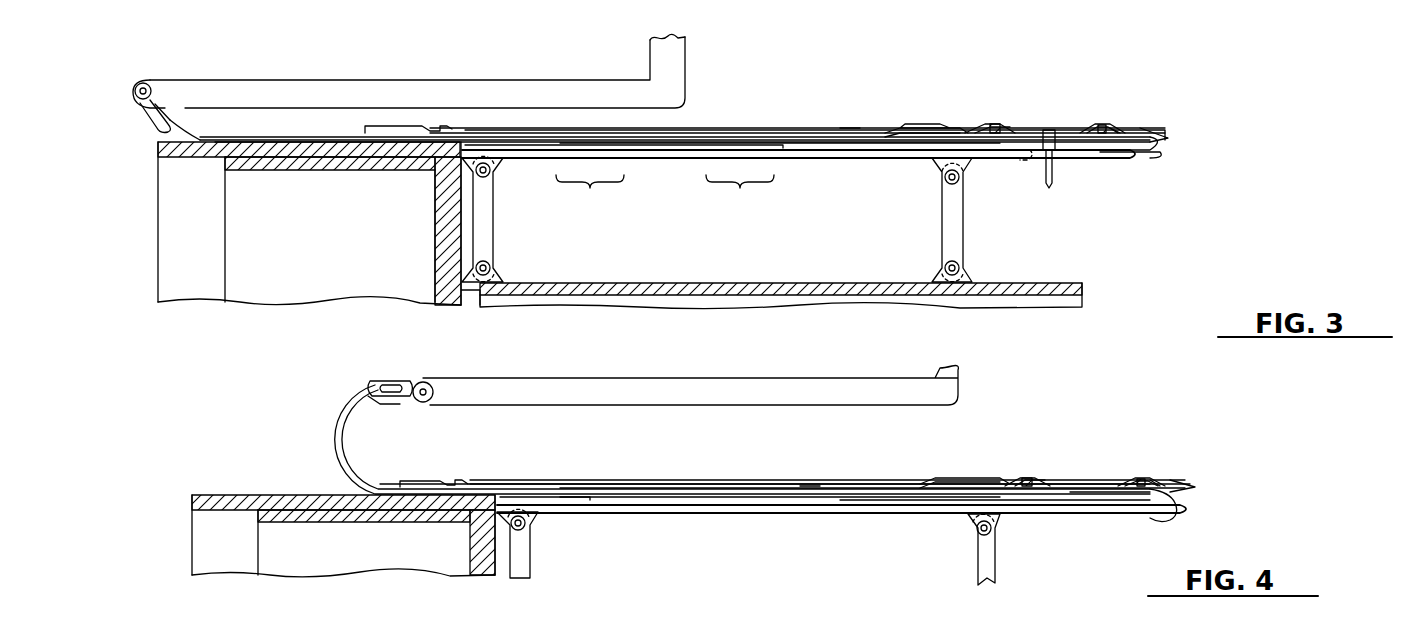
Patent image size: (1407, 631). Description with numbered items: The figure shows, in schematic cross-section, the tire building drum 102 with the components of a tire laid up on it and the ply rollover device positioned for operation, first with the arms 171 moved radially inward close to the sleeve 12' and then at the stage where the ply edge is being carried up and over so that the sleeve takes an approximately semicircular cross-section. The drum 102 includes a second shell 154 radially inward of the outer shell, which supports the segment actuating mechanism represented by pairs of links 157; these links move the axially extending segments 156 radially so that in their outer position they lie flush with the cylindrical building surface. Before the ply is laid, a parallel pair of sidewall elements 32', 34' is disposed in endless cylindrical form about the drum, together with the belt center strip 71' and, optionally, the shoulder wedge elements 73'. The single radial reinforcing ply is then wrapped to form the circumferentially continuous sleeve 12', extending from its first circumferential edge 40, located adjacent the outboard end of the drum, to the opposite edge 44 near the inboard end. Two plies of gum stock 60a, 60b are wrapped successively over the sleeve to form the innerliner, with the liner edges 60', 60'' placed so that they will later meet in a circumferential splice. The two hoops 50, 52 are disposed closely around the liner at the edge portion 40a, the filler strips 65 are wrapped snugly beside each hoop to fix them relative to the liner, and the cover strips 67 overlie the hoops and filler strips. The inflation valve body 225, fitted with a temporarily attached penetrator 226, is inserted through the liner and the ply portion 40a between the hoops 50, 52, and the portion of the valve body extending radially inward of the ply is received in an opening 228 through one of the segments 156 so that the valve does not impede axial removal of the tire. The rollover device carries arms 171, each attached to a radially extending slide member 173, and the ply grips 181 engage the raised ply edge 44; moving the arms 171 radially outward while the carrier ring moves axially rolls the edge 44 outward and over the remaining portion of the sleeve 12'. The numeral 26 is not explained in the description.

In FIG. 3, the cylindrical sleeve 12' is at (843, 97).
In FIG. 4, the cylindrical sleeve 12' is at (790, 456).
In FIG. 3, the base plate 26 is at (196, 158).
In FIG. 3, the sidewall element 32' is at (580, 172).
In FIG. 4, the sidewall element 32' is at (545, 474).
In FIG. 3, the sidewall element 34' is at (798, 172).
In FIG. 4, the sidewall element 34' is at (841, 480).
In FIG. 3, the first circumferential edge 40 is at (1165, 146).
In FIG. 4, the first circumferential edge 40 is at (1185, 505).
In FIG. 4, the one edge portion 40a is at (1080, 490).
In FIG. 3, the opposite circumferential edge 44 is at (178, 113).
In FIG. 4, the opposite circumferential edge 44 is at (392, 400).
In FIG. 3, the hoop 50 is at (1102, 124).
In FIG. 4, the hoop 50 is at (1143, 478).
In FIG. 3, the hoop 52 is at (995, 122).
In FIG. 4, the hoop 52 is at (1025, 475).
In FIG. 3, the axial edge of liner 60' is at (408, 84).
In FIG. 4, the axial edge of liner 60' is at (439, 466).
In FIG. 3, the axial edge of liner 60'' is at (1183, 122).
In FIG. 4, the axial edge of liner 60'' is at (1219, 484).
In FIG. 3, the ply of gum stock 60a is at (750, 130).
In FIG. 4, the ply of gum stock 60a is at (690, 490).
In FIG. 3, the ply of gum stock 60b is at (690, 128).
In FIG. 4, the ply of gum stock 60b is at (620, 484).
In FIG. 3, the filler strip 65 is at (1000, 128).
In FIG. 4, the filler strip 65 is at (1038, 483).
In FIG. 3, the cover strip 67 is at (980, 125).
In FIG. 4, the cover strip 67 is at (1005, 480).
In FIG. 3, the belt center strip 71' is at (780, 181).
In FIG. 4, the belt center strip 71' is at (780, 524).
In FIG. 3, the shoulder wedge element 73' is at (665, 194).
In FIG. 3, the drum 102 is at (400, 235).
In FIG. 4, the drum 102 is at (420, 548).
In FIG. 3, the second shell 154 is at (1082, 284).
In FIG. 3, the segment 156 is at (1150, 155).
In FIG. 4, the segment 156 is at (840, 503).
In FIG. 3, the links 157 is at (488, 238).
In FIG. 4, the links 157 is at (530, 566).
In FIG. 3, the arm 171 is at (345, 92).
In FIG. 4, the arm 171 is at (578, 388).
In FIG. 3, the slide member 173 is at (662, 46).
In FIG. 3, the ply grip 181 is at (163, 80).
In FIG. 4, the ply grip 181 is at (372, 381).
In FIG. 3, the inflation valve body 225 is at (1050, 128).
In FIG. 3, the penetrator 226 is at (1050, 186).
In FIG. 3, the opening 228 is at (1022, 165).